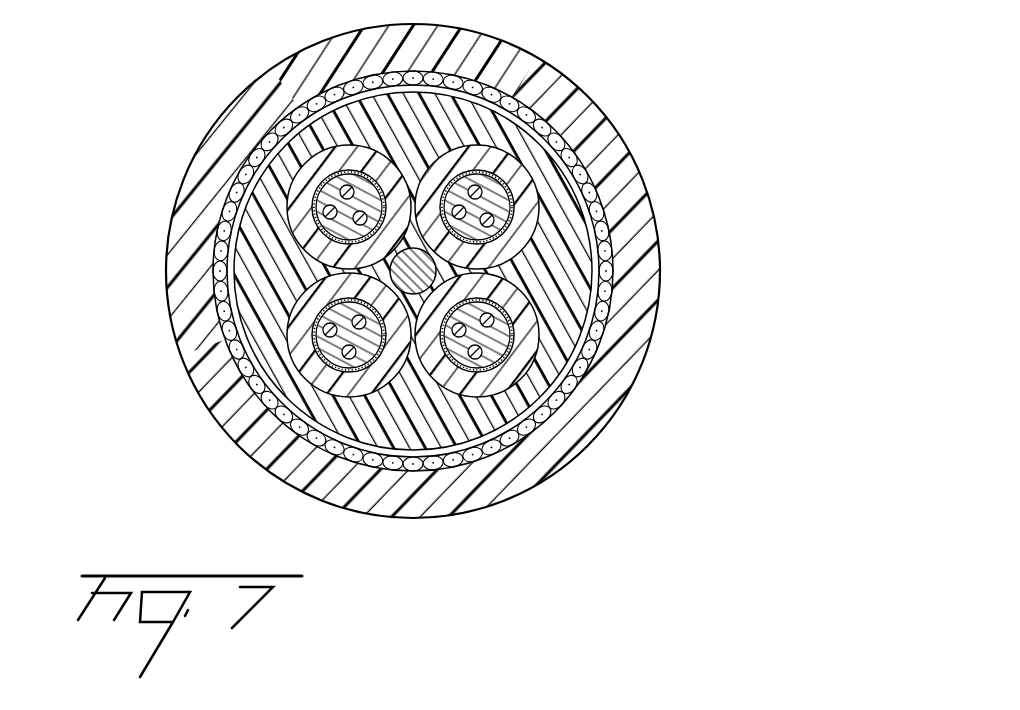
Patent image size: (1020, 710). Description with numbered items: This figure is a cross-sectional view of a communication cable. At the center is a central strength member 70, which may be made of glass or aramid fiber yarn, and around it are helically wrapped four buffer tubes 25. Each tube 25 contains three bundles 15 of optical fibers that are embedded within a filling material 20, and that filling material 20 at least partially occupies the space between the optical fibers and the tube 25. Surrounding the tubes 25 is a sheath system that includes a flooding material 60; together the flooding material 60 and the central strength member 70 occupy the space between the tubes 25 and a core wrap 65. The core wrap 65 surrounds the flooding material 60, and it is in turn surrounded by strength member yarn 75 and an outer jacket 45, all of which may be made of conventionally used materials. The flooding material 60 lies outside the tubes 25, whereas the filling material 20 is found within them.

The bundle of optical fibers 15 is at (520, 410).
The filling material 20 is at (505, 198).
The buffer tube 25 is at (290, 193).
The jacket 45 is at (287, 70).
The flooding material 60 is at (482, 128).
The core wrap 65 is at (597, 290).
The central strength member 70 is at (410, 271).
The strength member yarn 75 is at (590, 353).